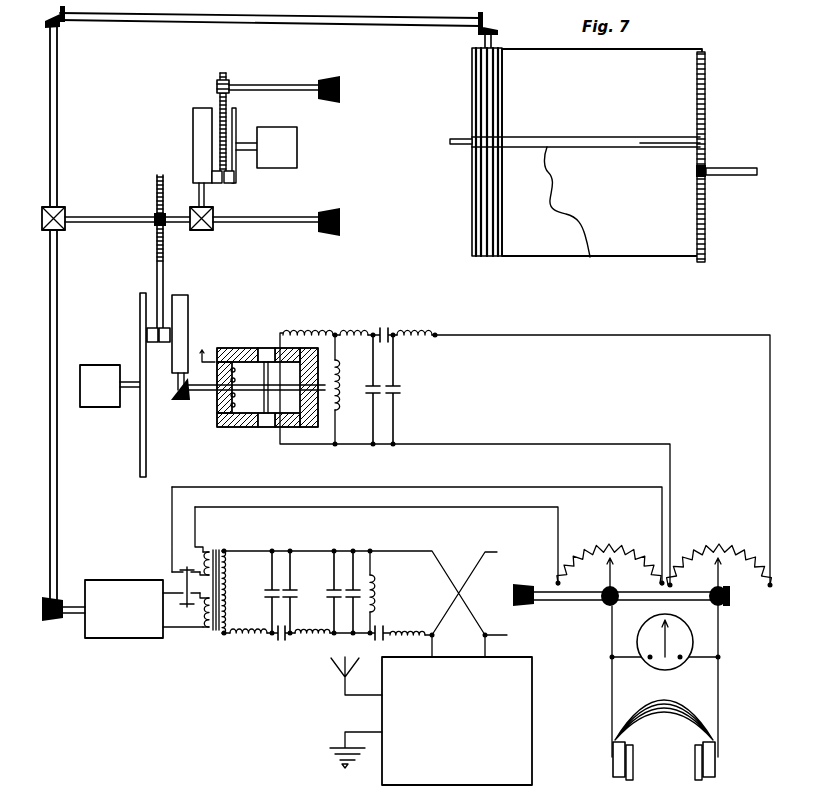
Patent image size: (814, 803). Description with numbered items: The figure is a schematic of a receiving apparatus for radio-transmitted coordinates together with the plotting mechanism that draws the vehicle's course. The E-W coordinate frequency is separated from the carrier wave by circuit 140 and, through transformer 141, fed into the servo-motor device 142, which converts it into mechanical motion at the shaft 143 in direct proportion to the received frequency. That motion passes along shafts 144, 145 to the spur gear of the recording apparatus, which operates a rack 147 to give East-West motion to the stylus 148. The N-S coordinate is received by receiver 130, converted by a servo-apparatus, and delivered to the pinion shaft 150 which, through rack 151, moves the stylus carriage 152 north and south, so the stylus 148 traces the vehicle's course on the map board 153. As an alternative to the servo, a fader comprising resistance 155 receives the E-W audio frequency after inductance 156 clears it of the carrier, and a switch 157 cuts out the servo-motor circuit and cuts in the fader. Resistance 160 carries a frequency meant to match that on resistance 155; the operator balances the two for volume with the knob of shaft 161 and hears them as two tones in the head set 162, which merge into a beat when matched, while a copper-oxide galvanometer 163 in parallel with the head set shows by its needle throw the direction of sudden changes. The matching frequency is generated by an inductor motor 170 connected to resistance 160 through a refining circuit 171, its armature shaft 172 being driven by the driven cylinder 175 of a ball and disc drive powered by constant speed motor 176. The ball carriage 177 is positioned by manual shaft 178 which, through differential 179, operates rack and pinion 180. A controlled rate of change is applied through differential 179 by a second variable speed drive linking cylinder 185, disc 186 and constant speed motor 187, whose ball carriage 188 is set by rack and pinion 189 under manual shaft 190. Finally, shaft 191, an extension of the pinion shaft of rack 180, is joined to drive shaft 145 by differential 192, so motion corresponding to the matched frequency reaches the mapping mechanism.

The receiver 130 is at (431, 721).
The circuit 140 is at (300, 582).
The transformer 141 is at (217, 633).
The servo-motor device 142 is at (144, 609).
The shaft 143 is at (72, 615).
The shaft 144 is at (50, 447).
The shaft 145 is at (258, 23).
The rack 147 is at (450, 138).
The stylus 148 is at (552, 145).
The pinion shaft 150 is at (745, 158).
The rack 151 is at (707, 118).
The stylus carriage 152 is at (633, 128).
The map board 153 is at (633, 247).
The resistance 155 is at (627, 532).
The inductance 156 is at (215, 547).
The switch 157 is at (180, 578).
The resistance 160 is at (733, 532).
The shaft 161 is at (558, 598).
The head set 162 is at (695, 762).
The copper-oxide galvanometer 163 is at (681, 638).
The inductor motor 170 is at (263, 350).
The refining circuit 171 is at (352, 350).
The armature shaft 172 is at (205, 393).
The driven cylinder 175 is at (180, 303).
The constant speed motor 176 is at (92, 365).
The ball carriage 177 is at (160, 343).
The shaft 178 is at (292, 215).
The differential 179 is at (202, 232).
The rack and pinion 180 is at (157, 213).
The cylinder 185 is at (192, 112).
The disc 186 is at (236, 122).
The constant speed motor 187 is at (285, 140).
The ball carriage 188 is at (223, 180).
The rack and pinion 189 is at (228, 85).
The shaft 190 is at (298, 85).
The shaft 191 is at (86, 219).
The differential 192 is at (65, 232).